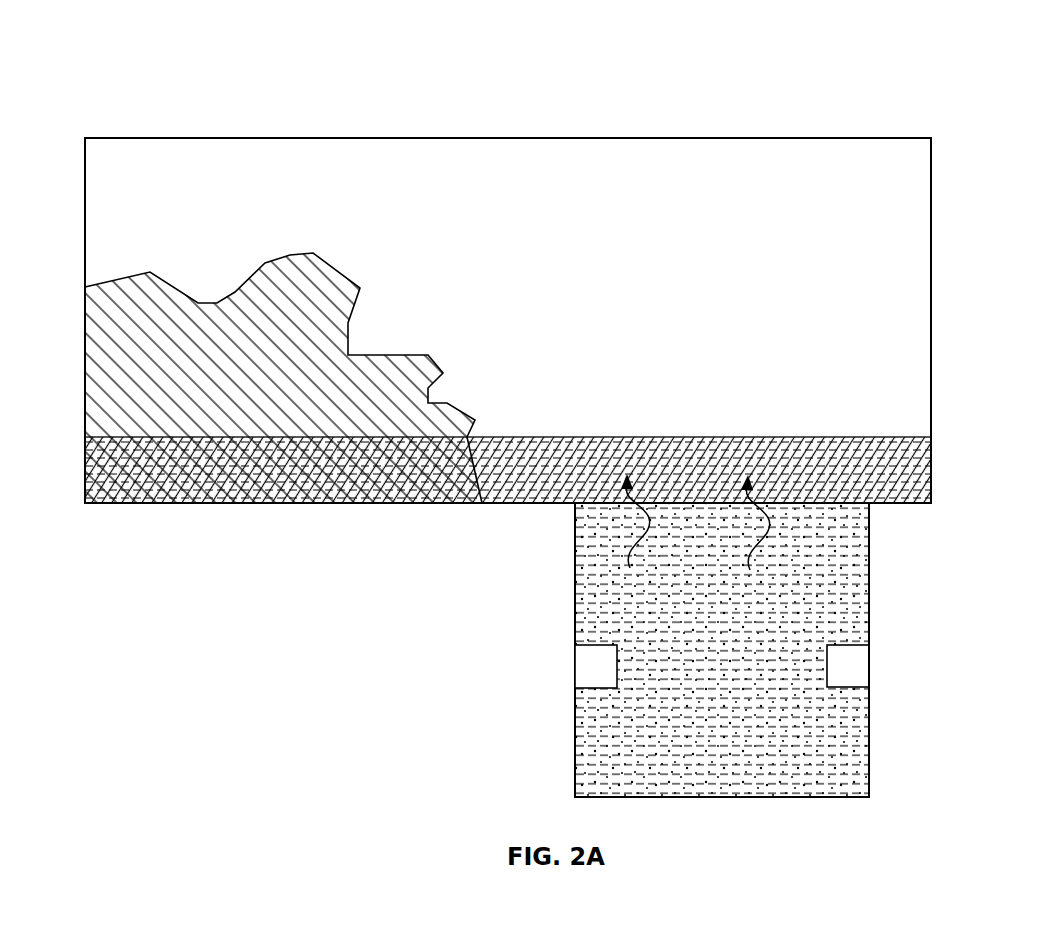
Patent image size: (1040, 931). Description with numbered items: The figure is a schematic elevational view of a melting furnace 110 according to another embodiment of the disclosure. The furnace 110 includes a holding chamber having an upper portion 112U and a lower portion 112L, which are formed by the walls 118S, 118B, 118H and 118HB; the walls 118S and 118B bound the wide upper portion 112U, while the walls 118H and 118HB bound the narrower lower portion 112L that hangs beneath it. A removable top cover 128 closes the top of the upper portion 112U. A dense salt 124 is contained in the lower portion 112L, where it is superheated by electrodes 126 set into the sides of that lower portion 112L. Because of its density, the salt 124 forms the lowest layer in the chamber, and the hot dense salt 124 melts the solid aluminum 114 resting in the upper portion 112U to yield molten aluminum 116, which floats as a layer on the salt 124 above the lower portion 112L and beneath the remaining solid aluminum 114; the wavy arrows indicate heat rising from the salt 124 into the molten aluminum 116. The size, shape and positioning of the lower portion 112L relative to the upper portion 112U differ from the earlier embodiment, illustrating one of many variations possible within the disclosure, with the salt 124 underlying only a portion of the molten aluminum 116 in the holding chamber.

The furnace 110 is at (132, 74).
The upper portion 112U is at (950, 257).
The lower portion 112L is at (725, 665).
The solid aluminum 114 is at (250, 387).
The molten aluminum 116 is at (719, 474).
The wall 118S is at (933, 396).
The wall 118B is at (500, 504).
The wall 118H is at (870, 765).
The wall 118HB is at (740, 798).
The salt 124 is at (736, 633).
The electrodes 126 is at (591, 645).
The top cover 128 is at (144, 137).